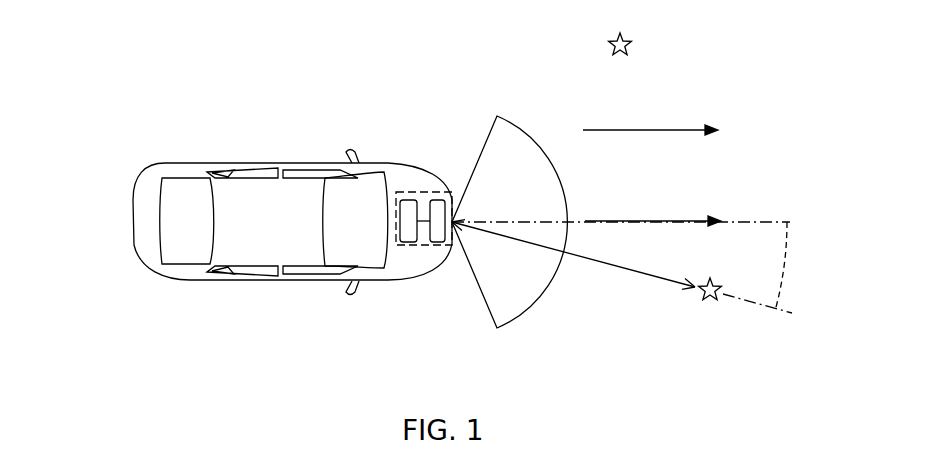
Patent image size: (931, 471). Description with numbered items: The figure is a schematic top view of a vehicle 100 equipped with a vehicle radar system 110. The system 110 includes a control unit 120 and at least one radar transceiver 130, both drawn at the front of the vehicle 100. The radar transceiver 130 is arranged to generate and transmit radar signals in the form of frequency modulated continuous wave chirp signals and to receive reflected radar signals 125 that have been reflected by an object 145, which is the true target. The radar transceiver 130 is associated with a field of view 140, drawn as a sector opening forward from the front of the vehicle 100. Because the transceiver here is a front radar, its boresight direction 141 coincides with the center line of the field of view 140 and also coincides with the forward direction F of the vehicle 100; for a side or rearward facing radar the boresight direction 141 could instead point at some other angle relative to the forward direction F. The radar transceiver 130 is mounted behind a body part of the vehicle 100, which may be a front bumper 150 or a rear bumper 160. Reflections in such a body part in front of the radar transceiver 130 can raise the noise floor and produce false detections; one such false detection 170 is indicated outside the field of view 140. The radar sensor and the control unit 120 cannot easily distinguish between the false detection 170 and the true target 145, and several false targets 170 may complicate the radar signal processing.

The vehicle 100 is at (150, 198).
The vehicle radar system 110 is at (398, 250).
The control unit 120 is at (409, 200).
The radar transceiver 130 is at (437, 200).
The field of view 140 is at (523, 176).
The boresight direction 141 is at (688, 219).
The reflected radar signals 125 is at (593, 260).
The object 145 is at (711, 302).
The front bumper 150 is at (443, 246).
The rear bumper 160 is at (145, 262).
The false detection 170 is at (620, 58).
The forward direction F is at (690, 130).